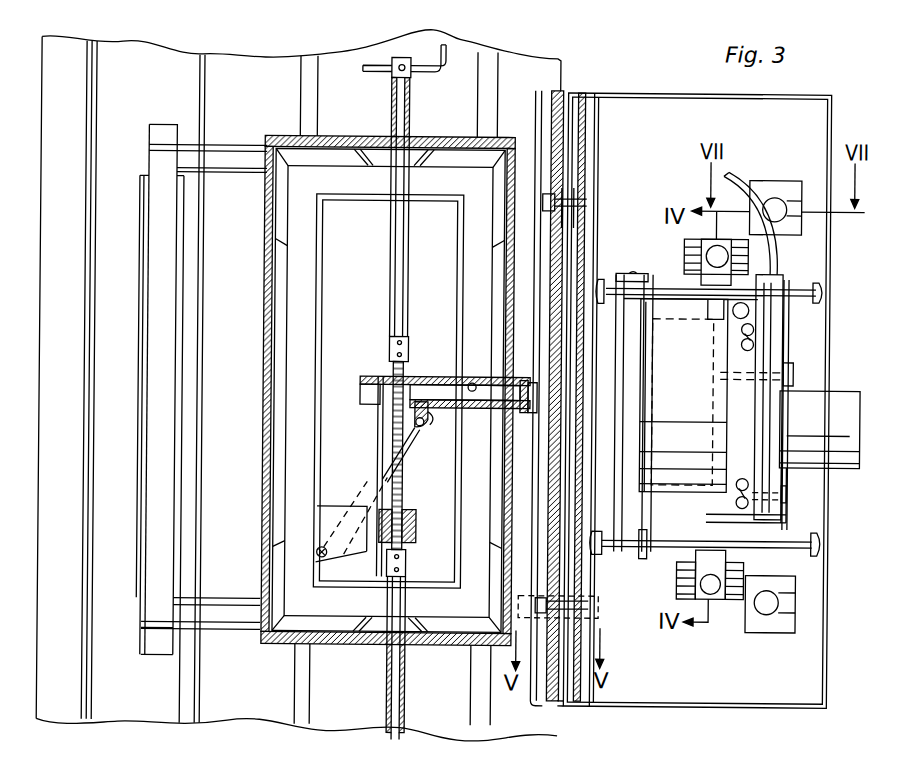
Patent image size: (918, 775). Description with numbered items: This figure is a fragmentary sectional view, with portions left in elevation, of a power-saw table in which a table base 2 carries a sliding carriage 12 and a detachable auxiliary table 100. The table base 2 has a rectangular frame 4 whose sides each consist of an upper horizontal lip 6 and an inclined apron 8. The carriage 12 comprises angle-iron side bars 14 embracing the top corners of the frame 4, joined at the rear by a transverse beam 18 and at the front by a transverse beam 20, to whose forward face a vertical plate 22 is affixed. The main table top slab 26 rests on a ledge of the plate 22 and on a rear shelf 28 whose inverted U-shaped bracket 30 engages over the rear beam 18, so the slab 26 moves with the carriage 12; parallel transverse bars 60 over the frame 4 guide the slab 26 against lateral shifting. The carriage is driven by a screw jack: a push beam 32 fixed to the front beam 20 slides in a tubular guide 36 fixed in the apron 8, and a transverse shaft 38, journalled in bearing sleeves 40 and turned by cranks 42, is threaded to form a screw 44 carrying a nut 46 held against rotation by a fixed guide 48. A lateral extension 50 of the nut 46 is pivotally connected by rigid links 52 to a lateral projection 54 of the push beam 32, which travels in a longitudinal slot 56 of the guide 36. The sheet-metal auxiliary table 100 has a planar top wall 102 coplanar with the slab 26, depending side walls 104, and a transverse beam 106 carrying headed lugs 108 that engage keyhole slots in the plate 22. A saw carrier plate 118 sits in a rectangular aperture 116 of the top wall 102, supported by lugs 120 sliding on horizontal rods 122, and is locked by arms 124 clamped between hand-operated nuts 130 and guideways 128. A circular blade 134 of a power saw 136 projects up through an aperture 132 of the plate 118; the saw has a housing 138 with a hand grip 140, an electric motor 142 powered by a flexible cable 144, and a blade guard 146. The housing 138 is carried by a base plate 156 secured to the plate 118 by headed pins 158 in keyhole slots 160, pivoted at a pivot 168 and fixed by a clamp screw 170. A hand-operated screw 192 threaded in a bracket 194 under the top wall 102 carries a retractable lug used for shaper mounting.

The table base 2 is at (261, 402).
The frame 4 is at (261, 347).
The upper horizontal lip 6 is at (297, 312).
The apron 8 is at (263, 438).
The carriage 12 is at (236, 145).
The angle-iron side bars 14 is at (238, 173).
The rear transverse beam 18 is at (148, 340).
The front transverse beam 20 is at (540, 113).
The plate 22 is at (558, 92).
The main table top slab 26 is at (255, 70).
The shelf 28 is at (161, 60).
The bracket 30 is at (142, 270).
The push beam 32 is at (474, 382).
The tubular guide 36 is at (435, 377).
The shaft 38 is at (388, 391).
The bearing sleeves 40 is at (410, 112).
The cranks 42 is at (446, 55).
The screw 44 is at (397, 427).
The nut 46 is at (407, 510).
The fixed guide 48 is at (380, 455).
The lateral horizontal extension 50 is at (338, 508).
The rigid links 52 is at (413, 440).
The lateral projection 54 is at (426, 424).
The longitudinal slot 56 is at (478, 410).
The horizontal bars 60 is at (300, 100).
The auxiliary table 100 is at (673, 90).
The top wall 102 is at (634, 107).
The side walls 104 is at (733, 93).
The transverse beam 106 is at (580, 95).
The headed lugs 108 is at (563, 173).
The rectangular aperture 116 is at (622, 273).
The saw carrier plate 118 is at (660, 527).
The lugs 120 is at (648, 273).
The horizontal rods 122 is at (668, 283).
The arm 124 is at (702, 597).
The guideway 128 is at (733, 597).
The hand-operated nut 130 is at (722, 592).
The rectangular aperture 132 is at (657, 355).
The circular blade 134 is at (705, 383).
The power saw 136 is at (873, 387).
The housing 138 is at (775, 420).
The hand grip 140 is at (771, 280).
The electric motor 142 is at (850, 467).
The flexible cable 144 is at (727, 178).
The blade guard 146 is at (675, 485).
The base plate 156 is at (748, 357).
The headed pins 158 is at (752, 342).
The keyhole slots 160 is at (752, 327).
The pivot 168 is at (785, 495).
The clamp screw 170 is at (795, 377).
The hand-operated screw 192 is at (775, 195).
The bracket 194 is at (795, 208).